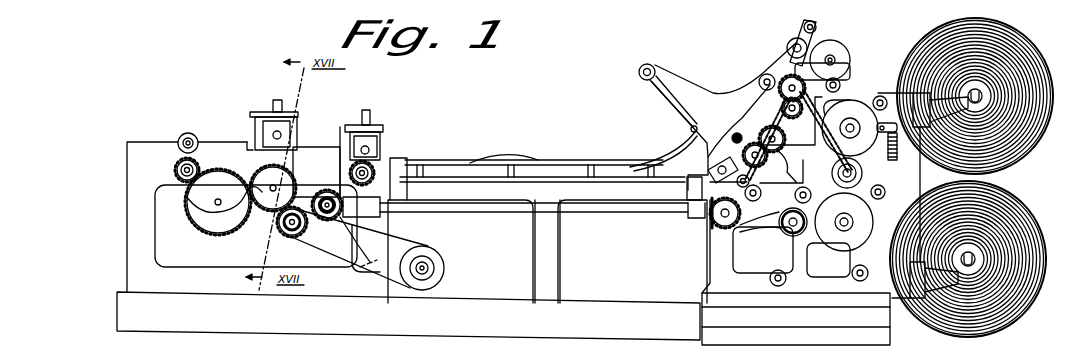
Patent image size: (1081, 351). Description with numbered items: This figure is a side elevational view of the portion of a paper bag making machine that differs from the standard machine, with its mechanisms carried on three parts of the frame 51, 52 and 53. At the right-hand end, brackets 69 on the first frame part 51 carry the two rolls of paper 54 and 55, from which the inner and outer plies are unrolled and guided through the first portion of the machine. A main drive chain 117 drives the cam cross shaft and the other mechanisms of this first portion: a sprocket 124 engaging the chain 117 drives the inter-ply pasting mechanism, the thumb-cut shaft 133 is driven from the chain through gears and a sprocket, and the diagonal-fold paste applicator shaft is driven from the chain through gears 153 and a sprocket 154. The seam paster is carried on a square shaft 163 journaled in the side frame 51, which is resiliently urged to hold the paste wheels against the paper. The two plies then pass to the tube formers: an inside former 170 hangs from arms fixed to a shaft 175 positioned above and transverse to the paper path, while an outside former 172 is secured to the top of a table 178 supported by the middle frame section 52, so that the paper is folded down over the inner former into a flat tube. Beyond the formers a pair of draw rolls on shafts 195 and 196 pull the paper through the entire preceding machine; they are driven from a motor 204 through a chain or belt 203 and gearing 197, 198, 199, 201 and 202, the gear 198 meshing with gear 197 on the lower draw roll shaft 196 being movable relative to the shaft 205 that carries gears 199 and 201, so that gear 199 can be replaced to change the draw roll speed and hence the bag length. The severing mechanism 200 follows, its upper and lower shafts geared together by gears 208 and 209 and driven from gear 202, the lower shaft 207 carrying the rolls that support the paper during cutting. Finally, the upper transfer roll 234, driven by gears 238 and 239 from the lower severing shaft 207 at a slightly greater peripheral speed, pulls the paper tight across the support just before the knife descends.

The first part of the frame 51 is at (893, 305).
The middle section of the frame 52 is at (548, 274).
The third part of the frame 53 is at (246, 279).
The upper roll of paper 54 is at (1022, 144).
The lower roll of paper 55 is at (1005, 312).
The brackets 69 is at (962, 93).
The chain 117 is at (836, 113).
The sprocket 124 is at (795, 224).
The shaft 133 is at (768, 178).
The gears 153 is at (778, 100).
The sprocket 154 is at (792, 46).
The square shaft 163 is at (812, 98).
The inside former 170 is at (658, 160).
The outside former 172 is at (506, 157).
The shaft 175 is at (658, 66).
The table 178 is at (645, 172).
The draw roll shaft 195 is at (368, 148).
The lower draw roll shaft 196 is at (370, 170).
The gear 197 is at (378, 184).
The gear 198 is at (357, 214).
The gear 199 is at (322, 236).
The severing mechanism 200 is at (243, 136).
The gear 201 is at (321, 160).
The gear 202 is at (284, 232).
The chain or belt 203 is at (361, 262).
The motor 204 is at (448, 264).
The shaft 205 is at (324, 192).
The lower shaft 207 is at (271, 184).
The gear 208 is at (262, 137).
The gear 209 is at (260, 215).
The upper transfer roll 234 is at (186, 132).
The gear 238 is at (178, 172).
The gear 239 is at (212, 222).